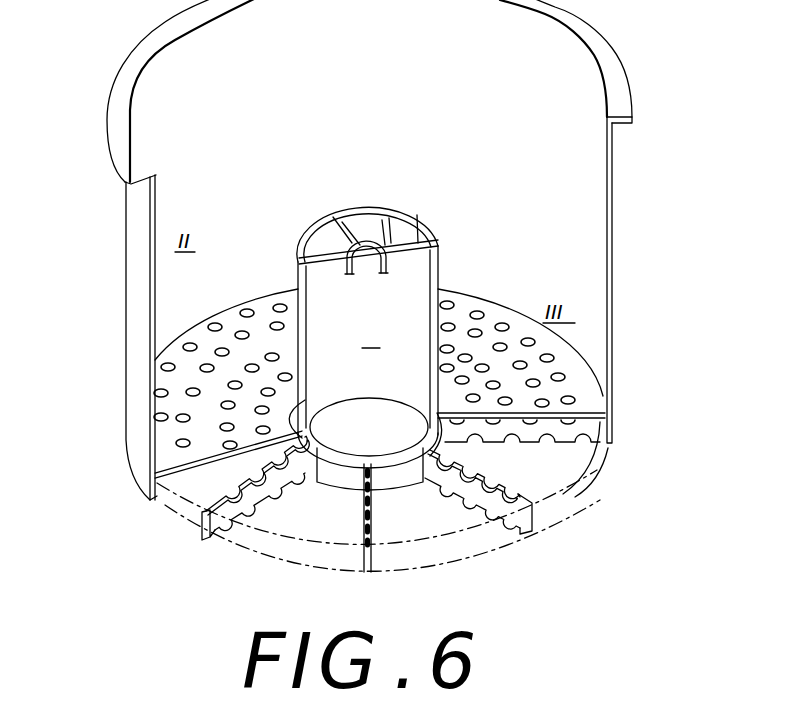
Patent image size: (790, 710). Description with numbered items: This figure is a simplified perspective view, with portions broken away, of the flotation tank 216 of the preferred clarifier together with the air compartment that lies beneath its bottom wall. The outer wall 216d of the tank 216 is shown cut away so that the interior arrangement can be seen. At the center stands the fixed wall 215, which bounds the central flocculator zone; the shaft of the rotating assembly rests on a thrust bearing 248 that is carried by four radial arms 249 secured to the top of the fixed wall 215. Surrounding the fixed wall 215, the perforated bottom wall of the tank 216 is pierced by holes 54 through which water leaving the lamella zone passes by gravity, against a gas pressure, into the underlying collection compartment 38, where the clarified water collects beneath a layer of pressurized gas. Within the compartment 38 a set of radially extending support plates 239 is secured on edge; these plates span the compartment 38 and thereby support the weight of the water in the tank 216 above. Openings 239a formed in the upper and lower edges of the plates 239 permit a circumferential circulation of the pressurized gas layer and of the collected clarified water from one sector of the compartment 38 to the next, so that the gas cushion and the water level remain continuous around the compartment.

The flotation tank 216 is at (118, 339).
The housing side wall 216d is at (607, 182).
The holes 54 is at (275, 323).
The fixed wall 215 is at (441, 271).
The thrust bearing 248 is at (388, 223).
The radial arms 249 is at (323, 234).
The support plates 239 is at (594, 428).
The openings 239a is at (578, 493).
The collection compartment 38 is at (163, 512).